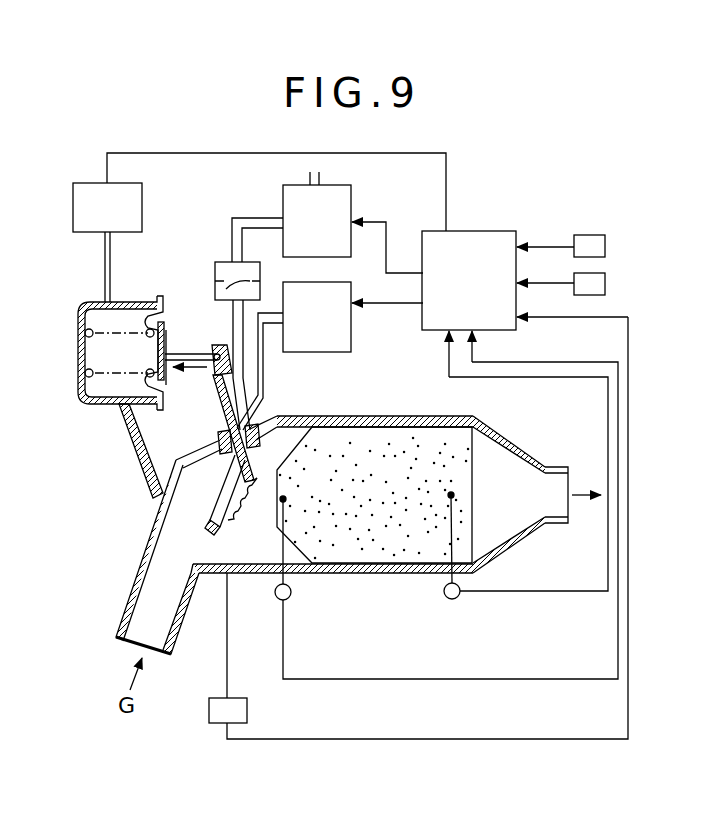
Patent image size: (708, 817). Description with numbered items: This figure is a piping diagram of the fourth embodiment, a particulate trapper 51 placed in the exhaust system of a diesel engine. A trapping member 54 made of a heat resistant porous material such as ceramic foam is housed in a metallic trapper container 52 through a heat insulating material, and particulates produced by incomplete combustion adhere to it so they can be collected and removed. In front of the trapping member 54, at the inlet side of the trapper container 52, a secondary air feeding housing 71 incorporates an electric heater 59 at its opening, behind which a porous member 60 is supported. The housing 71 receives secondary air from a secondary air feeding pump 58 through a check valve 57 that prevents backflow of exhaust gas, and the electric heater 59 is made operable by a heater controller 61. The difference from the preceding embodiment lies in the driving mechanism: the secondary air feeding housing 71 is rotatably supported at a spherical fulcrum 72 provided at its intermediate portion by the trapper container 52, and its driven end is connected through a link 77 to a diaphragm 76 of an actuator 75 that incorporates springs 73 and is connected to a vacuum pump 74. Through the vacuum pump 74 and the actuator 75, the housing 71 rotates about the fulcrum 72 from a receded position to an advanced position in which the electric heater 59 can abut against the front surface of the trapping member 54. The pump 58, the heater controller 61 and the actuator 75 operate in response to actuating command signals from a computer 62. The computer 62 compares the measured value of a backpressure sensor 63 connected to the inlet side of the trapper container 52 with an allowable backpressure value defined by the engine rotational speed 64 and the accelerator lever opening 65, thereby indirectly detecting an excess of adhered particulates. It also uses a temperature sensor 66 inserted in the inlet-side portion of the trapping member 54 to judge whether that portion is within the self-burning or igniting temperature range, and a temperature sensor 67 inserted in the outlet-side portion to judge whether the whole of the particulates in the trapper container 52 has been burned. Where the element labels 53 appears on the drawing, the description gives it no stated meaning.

The trapper 51 is at (529, 453).
The trapper container 52 is at (488, 431).
The filter housing 53 is at (441, 423).
The trapping member 54 is at (383, 450).
The check valve 57 is at (223, 265).
The secondary air feeding pump 58 is at (338, 203).
The electric heater 59 is at (238, 511).
The porous member 60 is at (210, 523).
The heater controller 61 is at (350, 328).
The computer 62 is at (491, 228).
The backpressure sensor 63 is at (219, 726).
The rotational speed 64 is at (593, 238).
The opening 65 is at (598, 285).
The temperature sensor 66 is at (292, 596).
The temperature sensor 67 is at (458, 598).
The secondary air feeding housing 71 is at (225, 491).
The spherical fulcrum 72 is at (218, 440).
The springs 73 is at (88, 400).
The vacuum pump 74 is at (74, 214).
The actuator 75 is at (78, 328).
The diaphragm 76 is at (170, 351).
The link 77 is at (211, 369).